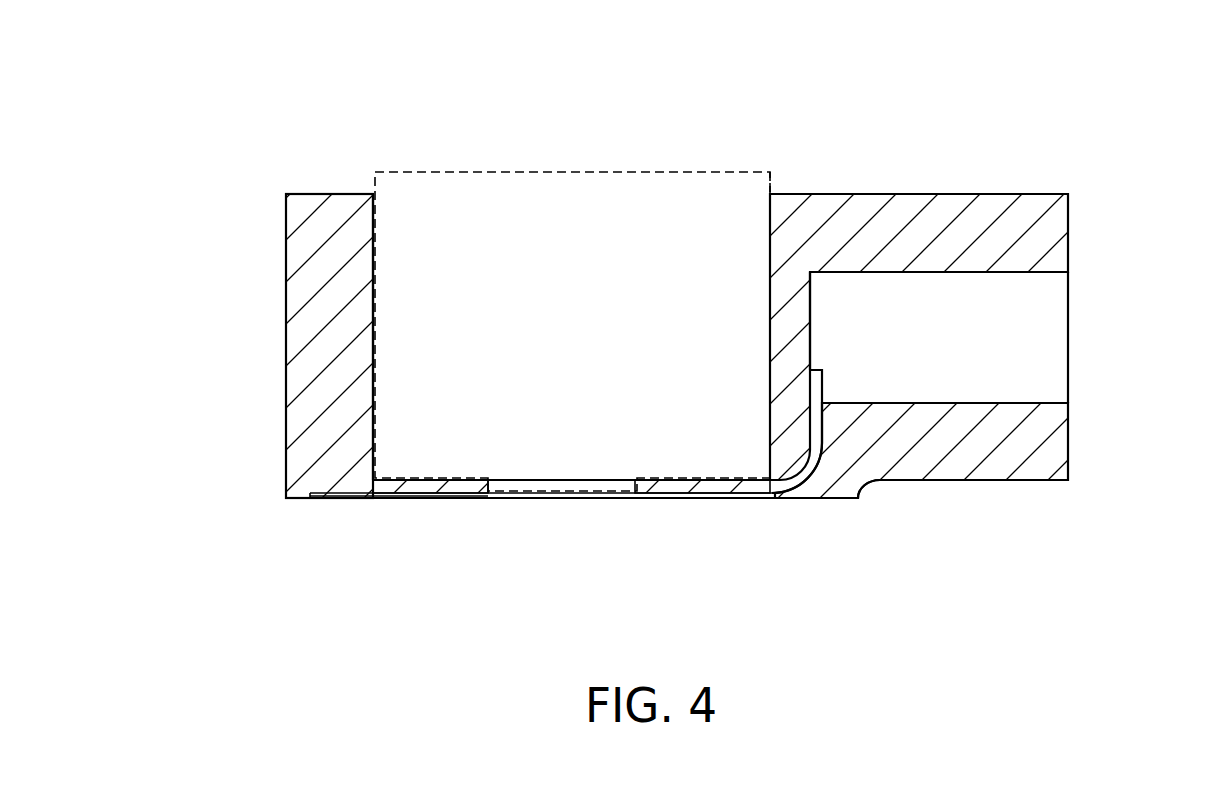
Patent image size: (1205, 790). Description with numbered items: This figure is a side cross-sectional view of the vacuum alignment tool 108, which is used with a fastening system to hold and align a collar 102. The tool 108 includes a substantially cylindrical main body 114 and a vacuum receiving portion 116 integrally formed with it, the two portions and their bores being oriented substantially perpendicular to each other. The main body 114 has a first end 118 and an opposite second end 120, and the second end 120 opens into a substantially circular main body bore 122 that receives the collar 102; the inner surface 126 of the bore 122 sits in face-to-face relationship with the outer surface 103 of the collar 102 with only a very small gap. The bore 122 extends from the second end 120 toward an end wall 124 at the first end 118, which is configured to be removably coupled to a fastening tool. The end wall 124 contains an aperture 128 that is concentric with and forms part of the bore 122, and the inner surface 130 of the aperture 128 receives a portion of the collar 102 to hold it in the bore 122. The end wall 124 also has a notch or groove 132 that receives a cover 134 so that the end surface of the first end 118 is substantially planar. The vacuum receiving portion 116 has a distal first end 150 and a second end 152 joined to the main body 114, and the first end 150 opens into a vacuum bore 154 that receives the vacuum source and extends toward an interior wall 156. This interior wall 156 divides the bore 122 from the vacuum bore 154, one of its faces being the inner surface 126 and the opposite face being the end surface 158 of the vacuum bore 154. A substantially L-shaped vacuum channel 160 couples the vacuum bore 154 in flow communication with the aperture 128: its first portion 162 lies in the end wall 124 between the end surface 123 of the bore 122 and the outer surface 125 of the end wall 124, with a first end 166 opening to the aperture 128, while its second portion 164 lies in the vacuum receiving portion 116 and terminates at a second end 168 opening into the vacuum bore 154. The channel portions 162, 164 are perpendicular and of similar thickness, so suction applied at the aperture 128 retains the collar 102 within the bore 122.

The vacuum alignment tool 108 is at (195, 86).
The second end 120 is at (648, 383).
The main body bore 122 is at (427, 240).
The collar 102 is at (601, 172).
The second end 168 is at (810, 370).
The outer surface 103 is at (771, 174).
The vacuum receiving portion 116 is at (1050, 212).
The inner surface 126 is at (376, 292).
The interior wall 156 is at (793, 308).
The vacuum bore 154 is at (1020, 306).
The main body 114 is at (323, 381).
The end surface 158 is at (810, 344).
The end surface 123 is at (442, 478).
The first end 166 is at (645, 478).
The notch or groove 132 is at (331, 496).
The first end 118 is at (262, 502).
The end wall 124 is at (378, 486).
The outer surface 125 is at (383, 498).
The cover 134 is at (420, 498).
The inner surface 130 is at (476, 498).
The aperture 128 is at (569, 445).
The first portion 162 is at (736, 488).
The vacuum channel 160 is at (820, 494).
The second portion 164 is at (822, 415).
The second end 152 is at (873, 508).
The first end 150 is at (1064, 505).